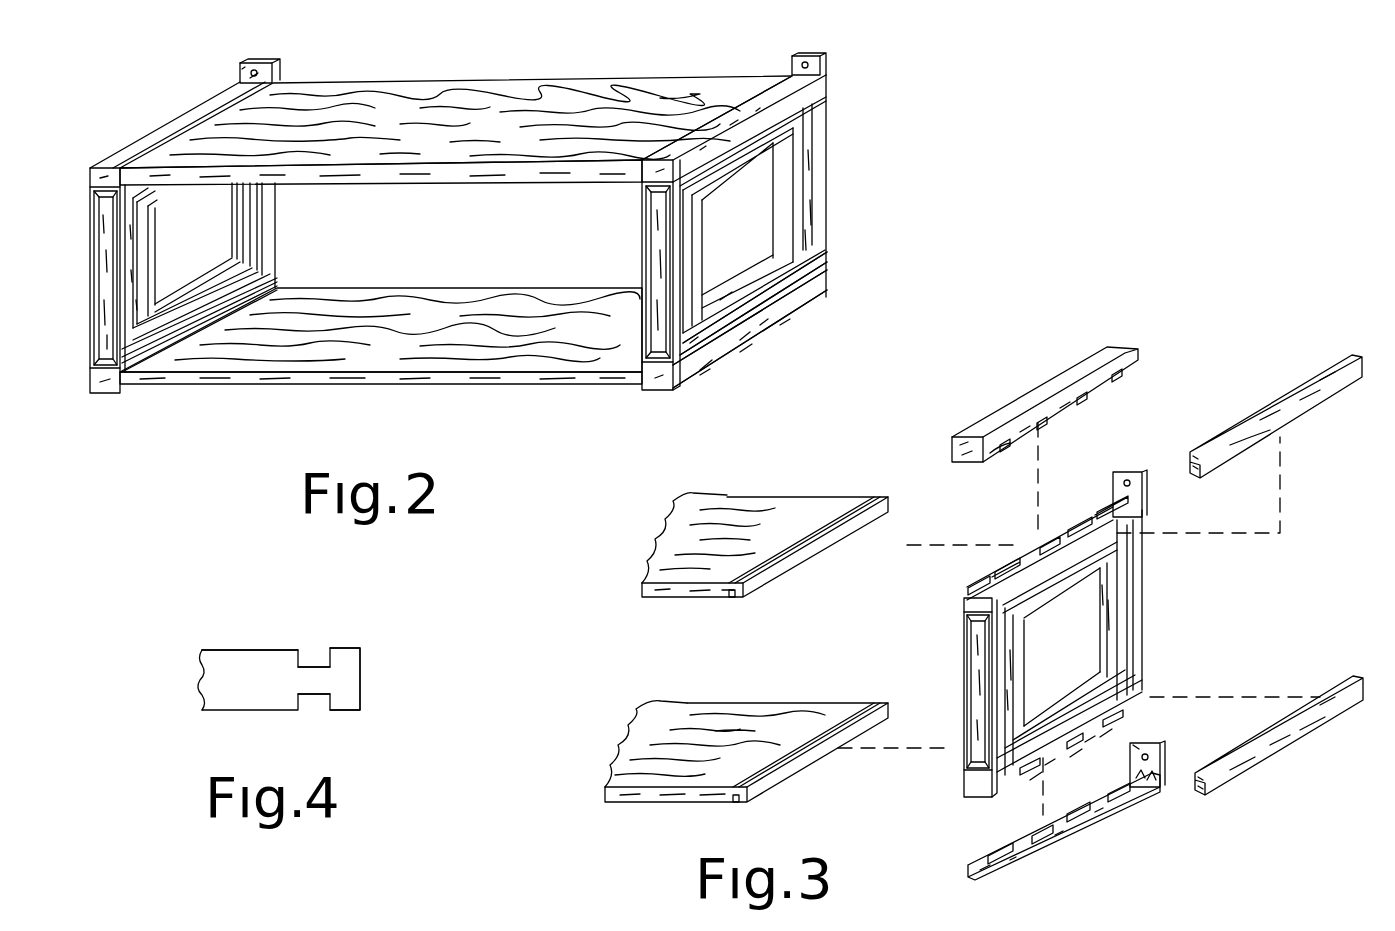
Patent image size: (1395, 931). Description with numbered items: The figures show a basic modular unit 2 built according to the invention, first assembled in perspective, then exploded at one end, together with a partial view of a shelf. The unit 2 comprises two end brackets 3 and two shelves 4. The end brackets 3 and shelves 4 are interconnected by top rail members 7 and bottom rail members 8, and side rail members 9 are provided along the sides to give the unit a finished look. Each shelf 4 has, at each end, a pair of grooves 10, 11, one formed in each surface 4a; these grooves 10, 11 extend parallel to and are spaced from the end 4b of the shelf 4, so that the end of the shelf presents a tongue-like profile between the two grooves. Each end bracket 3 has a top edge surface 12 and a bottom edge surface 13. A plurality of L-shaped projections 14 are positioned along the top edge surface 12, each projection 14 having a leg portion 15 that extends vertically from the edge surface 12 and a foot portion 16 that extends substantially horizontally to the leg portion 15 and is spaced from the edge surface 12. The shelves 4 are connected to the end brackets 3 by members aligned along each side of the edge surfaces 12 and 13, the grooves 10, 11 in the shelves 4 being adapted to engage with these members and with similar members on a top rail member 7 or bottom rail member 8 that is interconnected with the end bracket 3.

In FIG. 2, the basic modular unit 2 is at (258, 406).
In FIG. 2, the end bracket 3 is at (128, 258).
In FIG. 2, the shelf 4 is at (528, 100).
In FIG. 3, the shelf 4 is at (765, 510).
In FIG. 4, the shelf 4 is at (232, 710).
In FIG. 4, the surface of the shelf 4a is at (240, 650).
In FIG. 4, the end of the shelf 4b is at (360, 680).
In FIG. 2, the top rail member 7 is at (806, 92).
In FIG. 3, the top rail member 7 is at (975, 425).
In FIG. 2, the bottom rail member 8 is at (745, 342).
In FIG. 3, the bottom rail member 8 is at (1090, 820).
In FIG. 2, the side rail member 9 is at (792, 306).
In FIG. 3, the side rail member 9 is at (1292, 420).
In FIG. 4, the groove 10 is at (313, 667).
In FIG. 4, the groove 11 is at (316, 694).
In FIG. 3, the top edge surface 12 is at (1062, 540).
In FIG. 3, the bottom edge surface 13 is at (1046, 748).
In FIG. 3, the L-shaped projection 14 is at (1003, 560).
In FIG. 3, the leg portion 15 is at (1062, 540).
In FIG. 3, the foot portion 16 is at (964, 598).